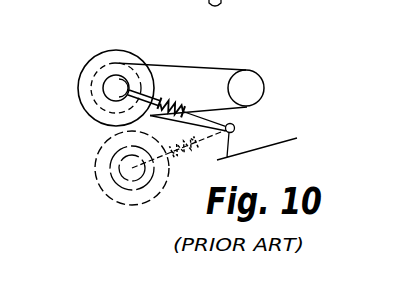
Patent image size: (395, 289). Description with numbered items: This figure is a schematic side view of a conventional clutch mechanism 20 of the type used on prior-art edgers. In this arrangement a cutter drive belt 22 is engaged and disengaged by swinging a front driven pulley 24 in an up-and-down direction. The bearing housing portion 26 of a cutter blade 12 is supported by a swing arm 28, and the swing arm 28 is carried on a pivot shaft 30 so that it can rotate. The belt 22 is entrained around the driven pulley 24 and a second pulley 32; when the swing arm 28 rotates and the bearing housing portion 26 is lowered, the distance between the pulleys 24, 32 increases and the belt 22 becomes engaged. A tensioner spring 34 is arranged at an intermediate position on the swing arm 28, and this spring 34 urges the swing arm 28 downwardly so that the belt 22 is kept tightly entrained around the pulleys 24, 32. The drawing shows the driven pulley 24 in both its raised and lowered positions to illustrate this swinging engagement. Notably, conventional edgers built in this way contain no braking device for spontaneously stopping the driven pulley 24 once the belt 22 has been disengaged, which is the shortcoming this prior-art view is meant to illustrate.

The cutter blade 12 is at (94, 56).
The conventional clutch mechanism 20 is at (222, 50).
The cutter drive belt 22 is at (177, 64).
The front driven pulley 24 is at (112, 84).
The bearing housing portion 26 is at (87, 98).
The swing arm 28 is at (246, 118).
The pivot shaft 30 is at (258, 150).
The pulley 32 is at (262, 71).
The tensioner spring 34 is at (196, 80).